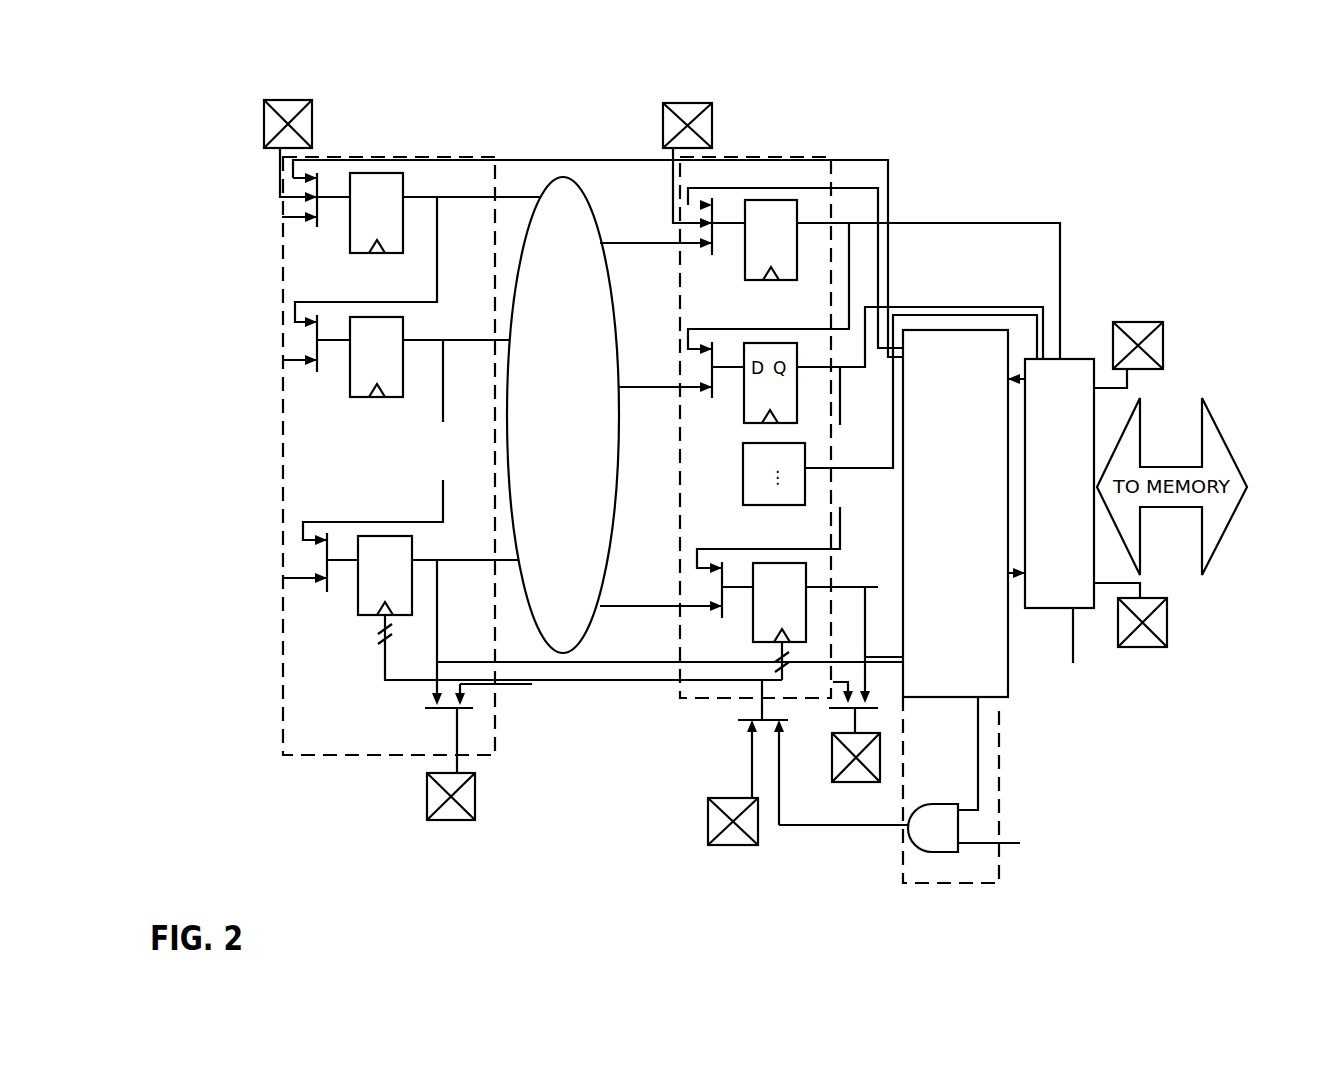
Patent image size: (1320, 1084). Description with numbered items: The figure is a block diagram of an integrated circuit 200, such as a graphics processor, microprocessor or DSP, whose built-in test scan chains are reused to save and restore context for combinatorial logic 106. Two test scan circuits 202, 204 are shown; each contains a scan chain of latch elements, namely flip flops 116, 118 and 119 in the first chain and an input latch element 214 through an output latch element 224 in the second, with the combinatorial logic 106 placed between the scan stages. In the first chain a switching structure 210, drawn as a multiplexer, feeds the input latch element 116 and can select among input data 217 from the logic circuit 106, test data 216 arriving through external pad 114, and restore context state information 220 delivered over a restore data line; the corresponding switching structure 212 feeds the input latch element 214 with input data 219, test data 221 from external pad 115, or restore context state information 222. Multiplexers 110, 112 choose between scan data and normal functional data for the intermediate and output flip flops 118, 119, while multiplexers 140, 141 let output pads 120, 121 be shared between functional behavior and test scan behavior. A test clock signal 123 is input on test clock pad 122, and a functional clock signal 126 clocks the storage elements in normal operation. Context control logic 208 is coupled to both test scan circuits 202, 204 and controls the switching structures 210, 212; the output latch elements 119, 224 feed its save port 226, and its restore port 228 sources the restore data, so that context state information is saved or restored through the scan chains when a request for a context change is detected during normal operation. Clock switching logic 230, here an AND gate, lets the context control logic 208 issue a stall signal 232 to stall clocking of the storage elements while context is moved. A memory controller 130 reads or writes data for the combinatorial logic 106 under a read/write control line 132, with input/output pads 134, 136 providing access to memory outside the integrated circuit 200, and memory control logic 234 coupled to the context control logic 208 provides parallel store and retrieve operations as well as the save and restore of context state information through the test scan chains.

The integrated circuit 200 is at (973, 72).
The test scan circuit 202 is at (425, 157).
The test scan circuit 204 is at (797, 157).
The combinatorial logic 106 is at (594, 215).
The multiplexer 110 is at (317, 370).
The multiplexer 112 is at (327, 558).
The test pad 114 is at (288, 100).
The external pad 115 is at (668, 103).
The input latch element 116 is at (405, 195).
The intermediate storage element 118 is at (405, 333).
The output latch element 119 is at (416, 556).
The output pad 120 is at (475, 790).
The output pad 121 is at (852, 782).
The test clock pad 122 is at (725, 845).
The test clock signal 123 is at (750, 760).
The functional clock signal 126 is at (1008, 843).
The memory controller 130 is at (1068, 359).
The read/write control line 132 is at (1072, 608).
The input/output pad 134 is at (1125, 322).
The input/output pad 136 is at (1150, 647).
The multiplexer 140 is at (458, 712).
The multiplexer 141 is at (868, 712).
The context control logic 208 is at (925, 330).
The switching structure 210 is at (317, 187).
The switching structure 212 is at (712, 205).
The input latch element 214 is at (749, 200).
The test data 216 is at (277, 175).
The input data 217 is at (295, 220).
The input data 219 is at (614, 244).
The restore context state information 220 is at (853, 160).
The test data 221 is at (673, 168).
The restore context state information 222 is at (878, 215).
The output latch element 224 is at (807, 602).
The save port 226 is at (905, 655).
The restore port 228 is at (905, 360).
The clock switching logic 230 is at (917, 845).
The stall signal 232 is at (978, 785).
The memory control logic 234 is at (1024, 608).